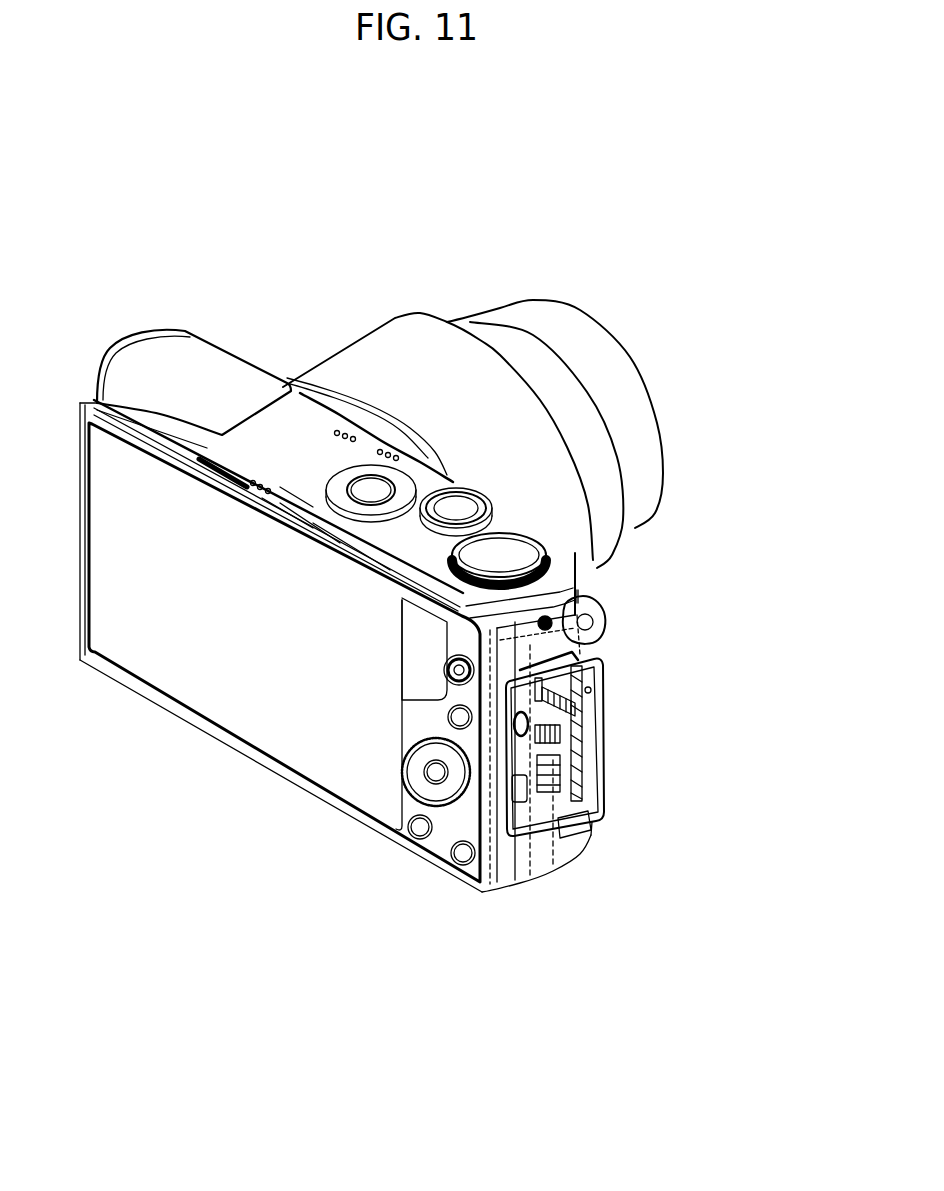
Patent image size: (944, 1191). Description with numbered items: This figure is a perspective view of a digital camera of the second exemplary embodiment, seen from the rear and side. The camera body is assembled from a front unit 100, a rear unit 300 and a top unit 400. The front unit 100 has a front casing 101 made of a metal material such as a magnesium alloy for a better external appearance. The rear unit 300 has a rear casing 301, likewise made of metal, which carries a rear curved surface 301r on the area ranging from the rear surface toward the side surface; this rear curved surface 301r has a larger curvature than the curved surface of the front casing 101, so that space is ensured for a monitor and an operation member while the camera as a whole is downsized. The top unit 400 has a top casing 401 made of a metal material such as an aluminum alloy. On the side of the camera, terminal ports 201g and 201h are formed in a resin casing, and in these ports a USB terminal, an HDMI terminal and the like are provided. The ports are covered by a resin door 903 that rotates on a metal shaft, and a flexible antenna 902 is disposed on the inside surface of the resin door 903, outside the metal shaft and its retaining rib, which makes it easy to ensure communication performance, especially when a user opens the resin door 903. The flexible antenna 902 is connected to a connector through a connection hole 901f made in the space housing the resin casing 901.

The front unit 100 is at (567, 860).
The front casing 101 is at (563, 840).
The rear unit 300 is at (360, 823).
The rear casing 301 is at (402, 832).
The rear curved surface 301r is at (487, 877).
The top unit 400 is at (520, 515).
The top casing 401 is at (550, 563).
The terminal port 201g is at (603, 783).
The terminal port 201h is at (577, 827).
The resin casing 901 is at (533, 715).
The connection hole 901f is at (555, 677).
The flexible antenna 902 is at (588, 725).
The resin door 903 is at (587, 750).